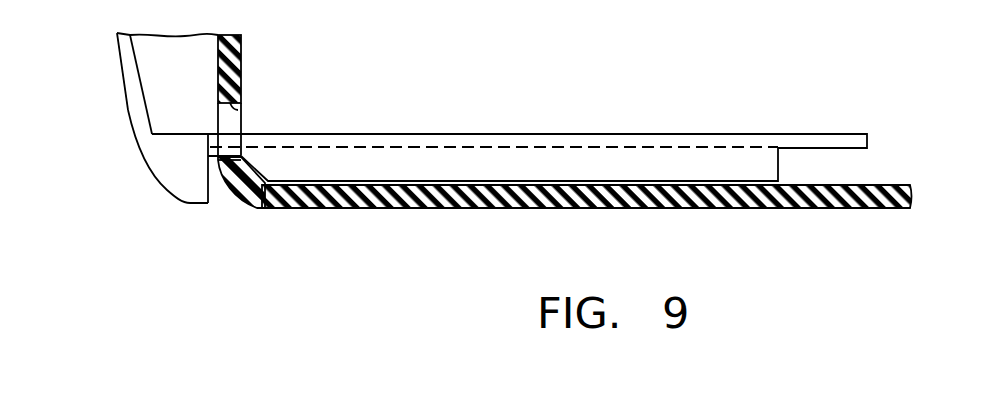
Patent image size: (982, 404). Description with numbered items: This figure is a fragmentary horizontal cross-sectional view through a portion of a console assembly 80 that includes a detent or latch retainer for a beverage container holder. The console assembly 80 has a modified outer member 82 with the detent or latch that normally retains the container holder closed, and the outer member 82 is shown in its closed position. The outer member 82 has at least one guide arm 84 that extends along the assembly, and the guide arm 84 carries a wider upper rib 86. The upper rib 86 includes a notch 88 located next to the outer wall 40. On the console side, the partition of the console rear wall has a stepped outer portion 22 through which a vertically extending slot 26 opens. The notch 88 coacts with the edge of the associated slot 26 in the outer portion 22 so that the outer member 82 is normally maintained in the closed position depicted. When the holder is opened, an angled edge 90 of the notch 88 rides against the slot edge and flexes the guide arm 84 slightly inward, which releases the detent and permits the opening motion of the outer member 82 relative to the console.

The outer wall 40 is at (128, 110).
The outer member 82 is at (150, 170).
The outer portion 22 is at (241, 78).
The slot 26 is at (241, 117).
The guide arm 84 is at (695, 134).
The console assembly 80 is at (417, 75).
The notch 88 is at (211, 160).
The angled edge 90 is at (247, 162).
The upper rib 86 is at (363, 184).